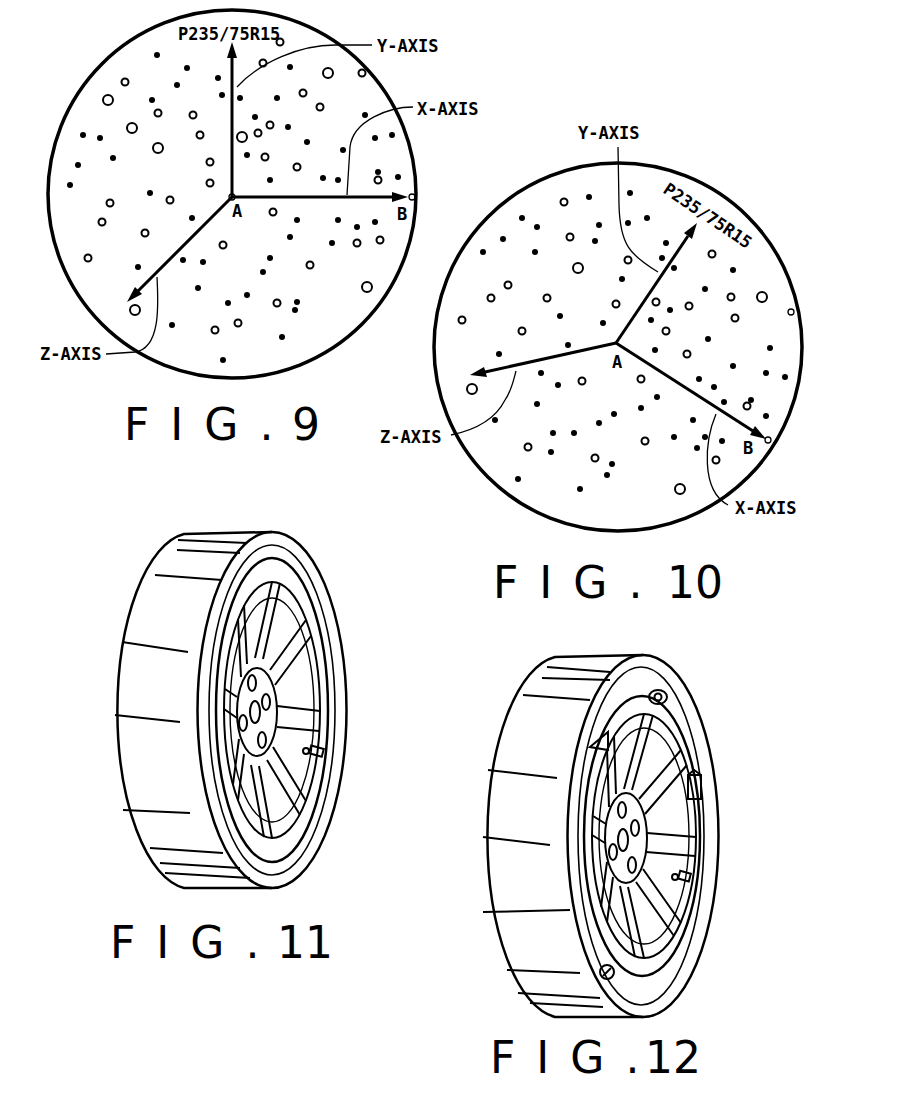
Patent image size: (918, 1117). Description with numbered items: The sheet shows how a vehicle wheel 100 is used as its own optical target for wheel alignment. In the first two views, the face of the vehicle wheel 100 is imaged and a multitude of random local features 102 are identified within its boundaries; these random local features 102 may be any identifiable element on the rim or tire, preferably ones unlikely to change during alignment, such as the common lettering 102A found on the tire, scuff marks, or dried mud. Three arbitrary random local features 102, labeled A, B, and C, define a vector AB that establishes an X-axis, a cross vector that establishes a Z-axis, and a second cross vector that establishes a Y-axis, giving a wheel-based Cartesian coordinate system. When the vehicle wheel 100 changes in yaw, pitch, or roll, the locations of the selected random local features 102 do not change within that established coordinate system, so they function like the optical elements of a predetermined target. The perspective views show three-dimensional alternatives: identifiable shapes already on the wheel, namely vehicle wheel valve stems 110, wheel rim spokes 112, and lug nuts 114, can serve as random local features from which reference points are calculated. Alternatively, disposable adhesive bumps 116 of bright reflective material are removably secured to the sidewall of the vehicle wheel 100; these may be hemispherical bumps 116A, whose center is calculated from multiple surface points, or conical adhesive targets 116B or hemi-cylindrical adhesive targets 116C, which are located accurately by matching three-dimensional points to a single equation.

In FIG. 9, the vehicle wheel 100 is at (77, 97).
In FIG. 10, the vehicle wheel 100 is at (470, 456).
In FIG. 11, the vehicle wheel 100 is at (337, 793).
In FIG. 12, the vehicle wheel 100 is at (712, 941).
In FIG. 10, the random local features 102 is at (794, 313).
In FIG. 10, the common lettering 102A is at (760, 243).
In FIG. 11, the vehicle wheel valve stem 110 is at (320, 752).
In FIG. 12, the vehicle wheel valve stem 110 is at (683, 877).
In FIG. 11, the wheel rim spokes 112 is at (290, 672).
In FIG. 12, the wheel rim spokes 112 is at (607, 925).
In FIG. 11, the lug nuts 114 is at (240, 724).
In FIG. 12, the lug nuts 114 is at (613, 853).
In FIG. 12, the adhesive bumps 116 is at (662, 693).
In FIG. 12, the hemispherical adhesive bump 116A is at (603, 973).
In FIG. 12, the conical adhesive target 116B is at (597, 740).
In FIG. 12, the hemi-cylindrical adhesive target 116C is at (703, 783).